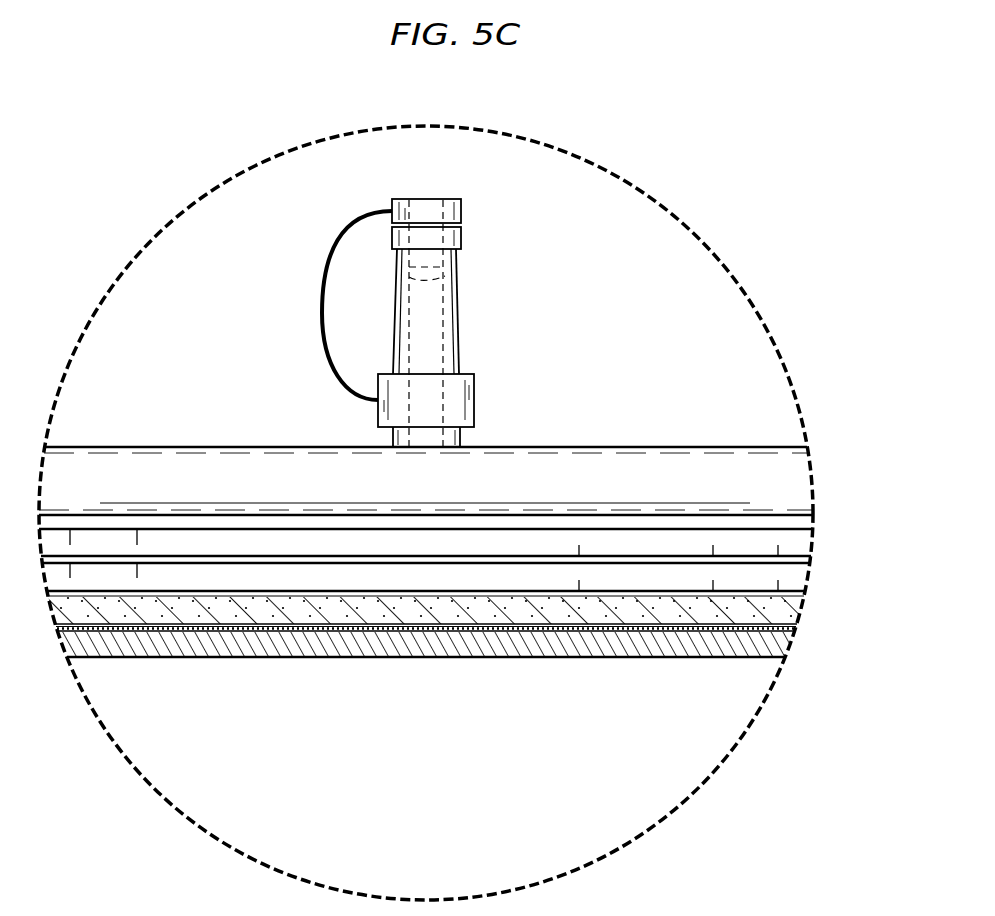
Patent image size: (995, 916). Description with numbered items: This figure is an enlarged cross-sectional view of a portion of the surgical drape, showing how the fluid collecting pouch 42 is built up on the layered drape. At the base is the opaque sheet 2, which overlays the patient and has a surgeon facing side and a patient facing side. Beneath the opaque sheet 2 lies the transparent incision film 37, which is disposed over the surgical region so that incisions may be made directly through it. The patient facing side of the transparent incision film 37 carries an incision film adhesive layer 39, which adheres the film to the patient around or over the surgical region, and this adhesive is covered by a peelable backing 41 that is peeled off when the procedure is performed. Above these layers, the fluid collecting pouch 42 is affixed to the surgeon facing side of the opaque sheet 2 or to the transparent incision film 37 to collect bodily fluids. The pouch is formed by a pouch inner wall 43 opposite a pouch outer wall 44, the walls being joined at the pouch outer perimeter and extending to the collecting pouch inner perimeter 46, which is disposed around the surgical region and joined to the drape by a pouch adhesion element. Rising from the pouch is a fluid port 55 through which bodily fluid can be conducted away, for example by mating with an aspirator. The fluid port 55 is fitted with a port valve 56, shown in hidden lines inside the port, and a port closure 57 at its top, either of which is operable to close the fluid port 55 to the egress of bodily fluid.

The port closure 57 is at (442, 200).
The port valve 56 is at (445, 276).
The fluid port 55 is at (461, 346).
The fluid collecting pouch 42 is at (693, 425).
The collecting pouch inner perimeter 46 is at (762, 473).
The pouch outer wall 44 is at (815, 483).
The pouch inner wall 43 is at (840, 520).
The opaque sheet 2 is at (800, 578).
The transparent incision film 37 is at (793, 615).
The incision film adhesive layer 39 is at (793, 632).
The peelable backing 41 is at (730, 658).